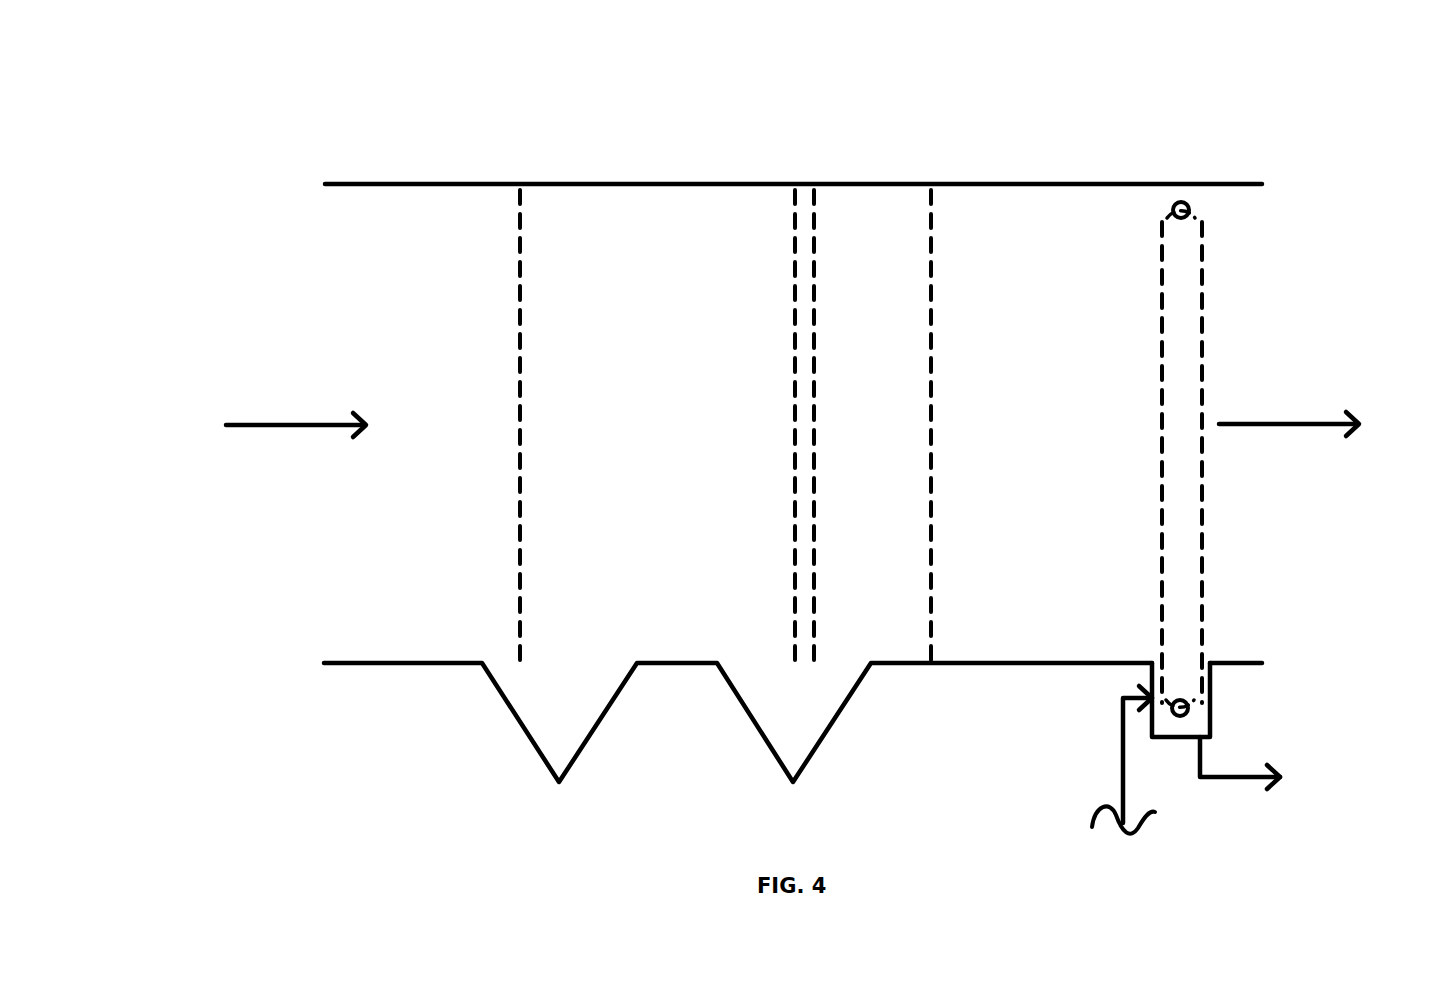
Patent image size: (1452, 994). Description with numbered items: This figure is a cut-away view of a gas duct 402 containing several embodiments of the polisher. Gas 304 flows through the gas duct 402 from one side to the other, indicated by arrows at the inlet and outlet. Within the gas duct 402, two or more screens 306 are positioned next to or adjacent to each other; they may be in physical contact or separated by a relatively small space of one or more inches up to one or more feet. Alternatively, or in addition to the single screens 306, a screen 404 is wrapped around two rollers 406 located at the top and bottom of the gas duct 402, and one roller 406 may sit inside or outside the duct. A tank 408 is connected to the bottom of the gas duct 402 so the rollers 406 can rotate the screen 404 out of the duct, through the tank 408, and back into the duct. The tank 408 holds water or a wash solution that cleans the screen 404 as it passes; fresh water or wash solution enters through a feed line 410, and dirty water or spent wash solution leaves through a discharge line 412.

The gas duct 402 is at (343, 184).
The screens 306 is at (793, 250).
The fluid flow 304 is at (266, 423).
The screen 404 is at (1202, 295).
The rollers 406 is at (1198, 208).
The tank 408 is at (1212, 720).
The feed line 410 is at (1127, 742).
The discharge line 412 is at (1233, 783).